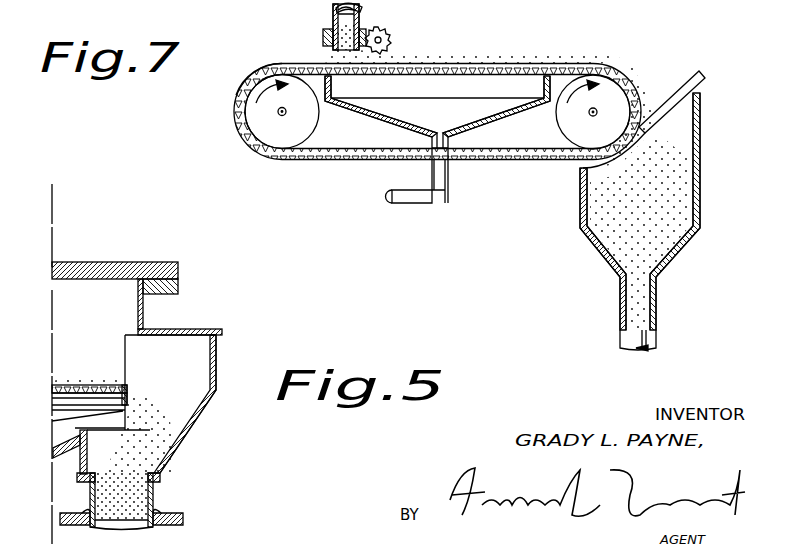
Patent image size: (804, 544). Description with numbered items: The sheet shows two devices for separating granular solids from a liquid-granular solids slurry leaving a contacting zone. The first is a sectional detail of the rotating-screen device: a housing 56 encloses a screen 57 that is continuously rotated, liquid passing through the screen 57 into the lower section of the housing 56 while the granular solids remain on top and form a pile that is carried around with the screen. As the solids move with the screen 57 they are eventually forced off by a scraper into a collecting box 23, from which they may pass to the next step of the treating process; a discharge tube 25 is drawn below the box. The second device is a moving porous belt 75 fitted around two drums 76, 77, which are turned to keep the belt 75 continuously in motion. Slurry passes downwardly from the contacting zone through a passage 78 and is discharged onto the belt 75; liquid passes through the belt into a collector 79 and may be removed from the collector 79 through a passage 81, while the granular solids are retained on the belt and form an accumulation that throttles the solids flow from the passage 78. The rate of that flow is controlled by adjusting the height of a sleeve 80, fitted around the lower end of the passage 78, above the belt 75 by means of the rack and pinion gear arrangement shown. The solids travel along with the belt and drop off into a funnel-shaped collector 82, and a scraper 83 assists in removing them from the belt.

In FIG. 7, the moving porous belt 75 is at (258, 85).
In FIG. 7, the drum 76 is at (276, 140).
In FIG. 7, the drum 77 is at (575, 125).
In FIG. 7, the passage 78 is at (359, 12).
In FIG. 7, the collector 79 is at (386, 106).
In FIG. 7, the sleeve 80 is at (323, 38).
In FIG. 7, the passage 81 is at (430, 197).
In FIG. 7, the funnel-shaped collector 82 is at (700, 182).
In FIG. 7, the scraper 83 is at (676, 92).
In FIG. 5, the housing 56 is at (165, 268).
In FIG. 5, the collecting box 23 is at (218, 338).
In FIG. 5, the screen 57 is at (90, 384).
In FIG. 5, the discharge tube 25 is at (153, 497).